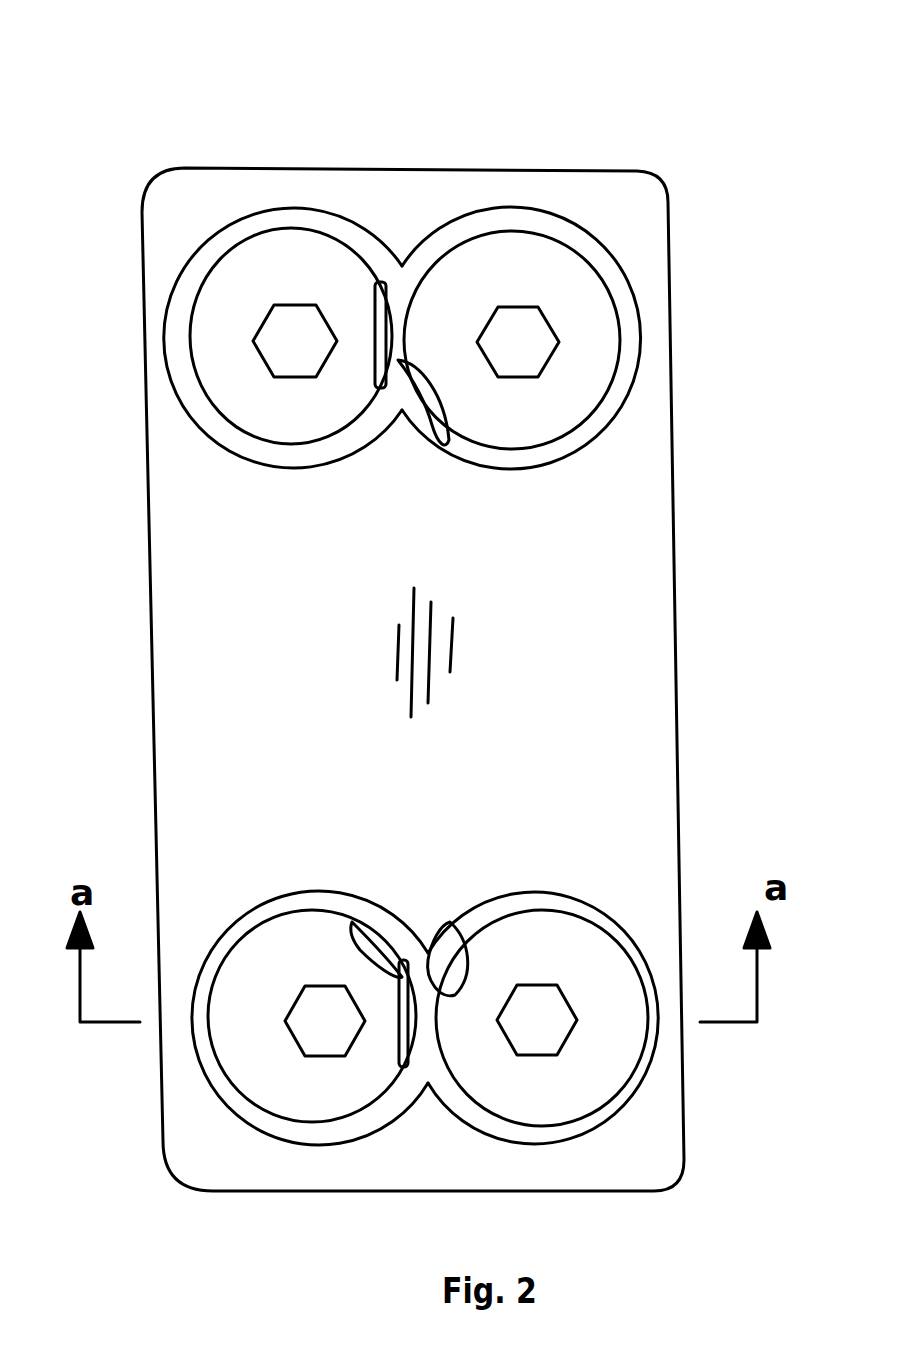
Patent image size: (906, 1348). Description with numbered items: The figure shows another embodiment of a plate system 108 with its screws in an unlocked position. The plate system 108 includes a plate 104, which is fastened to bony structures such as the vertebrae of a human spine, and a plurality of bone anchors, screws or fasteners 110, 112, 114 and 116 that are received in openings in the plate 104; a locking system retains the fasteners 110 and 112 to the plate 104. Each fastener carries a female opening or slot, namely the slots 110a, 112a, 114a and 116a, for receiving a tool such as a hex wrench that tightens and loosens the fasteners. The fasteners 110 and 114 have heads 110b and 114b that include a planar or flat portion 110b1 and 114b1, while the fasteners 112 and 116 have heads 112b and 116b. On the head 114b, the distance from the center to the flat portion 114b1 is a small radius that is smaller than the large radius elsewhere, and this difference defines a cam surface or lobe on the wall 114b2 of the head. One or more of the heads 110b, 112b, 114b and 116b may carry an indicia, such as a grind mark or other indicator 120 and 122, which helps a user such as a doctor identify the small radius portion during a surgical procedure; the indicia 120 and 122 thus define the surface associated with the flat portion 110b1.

The plate 104 is at (568, 681).
The plate system 108 is at (216, 126).
The fastener 110 is at (190, 328).
The female opening or slot 110a is at (290, 305).
The head 110b is at (208, 230).
The planar or flat portion 110b1 is at (449, 440).
The fastener 112 is at (628, 328).
The female opening or slot 112a is at (516, 307).
The head 112b is at (590, 226).
The fastener 114 is at (226, 1110).
The female opening or slot 114a is at (296, 1030).
The head 114b is at (225, 935).
The planar or flat portion 114b1 is at (450, 922).
The wall 114b2 is at (270, 922).
The fastener 116 is at (630, 1110).
The female opening or slot 116a is at (556, 1012).
The head 116b is at (606, 895).
The indicia or indicator 120 is at (393, 365).
The indicia or indicator 122 is at (352, 922).